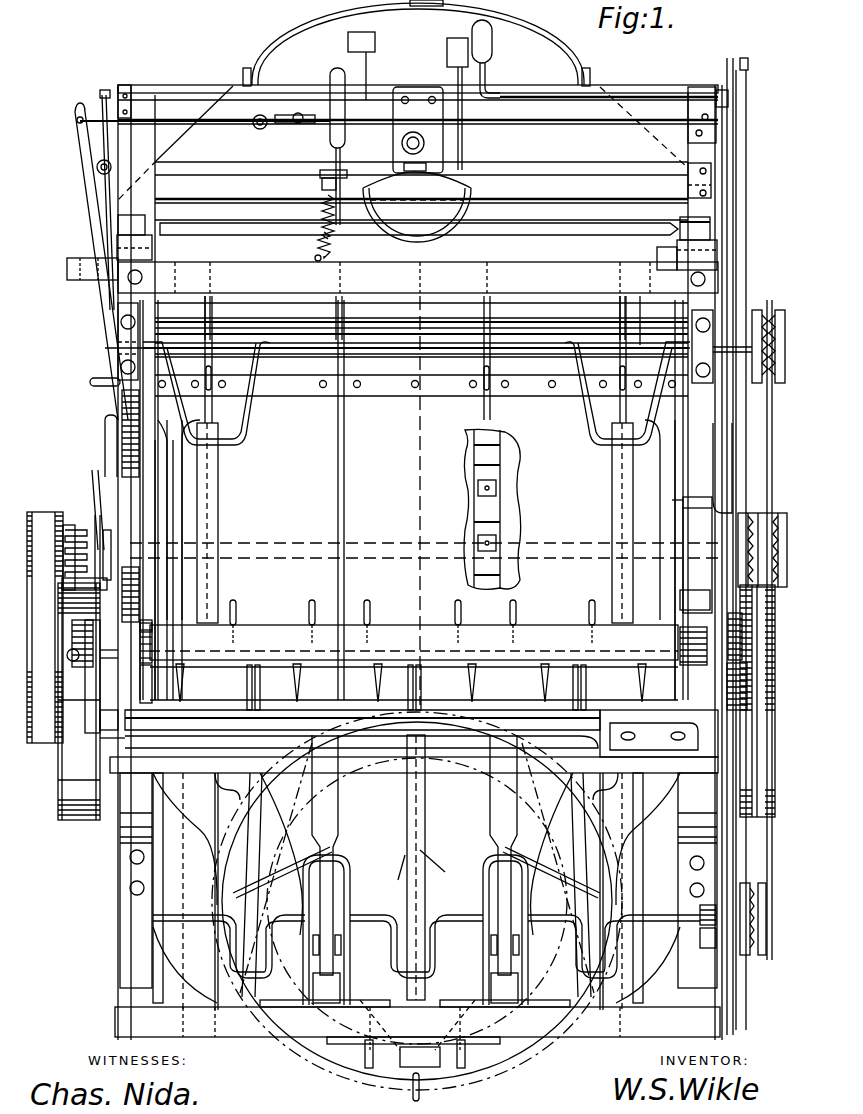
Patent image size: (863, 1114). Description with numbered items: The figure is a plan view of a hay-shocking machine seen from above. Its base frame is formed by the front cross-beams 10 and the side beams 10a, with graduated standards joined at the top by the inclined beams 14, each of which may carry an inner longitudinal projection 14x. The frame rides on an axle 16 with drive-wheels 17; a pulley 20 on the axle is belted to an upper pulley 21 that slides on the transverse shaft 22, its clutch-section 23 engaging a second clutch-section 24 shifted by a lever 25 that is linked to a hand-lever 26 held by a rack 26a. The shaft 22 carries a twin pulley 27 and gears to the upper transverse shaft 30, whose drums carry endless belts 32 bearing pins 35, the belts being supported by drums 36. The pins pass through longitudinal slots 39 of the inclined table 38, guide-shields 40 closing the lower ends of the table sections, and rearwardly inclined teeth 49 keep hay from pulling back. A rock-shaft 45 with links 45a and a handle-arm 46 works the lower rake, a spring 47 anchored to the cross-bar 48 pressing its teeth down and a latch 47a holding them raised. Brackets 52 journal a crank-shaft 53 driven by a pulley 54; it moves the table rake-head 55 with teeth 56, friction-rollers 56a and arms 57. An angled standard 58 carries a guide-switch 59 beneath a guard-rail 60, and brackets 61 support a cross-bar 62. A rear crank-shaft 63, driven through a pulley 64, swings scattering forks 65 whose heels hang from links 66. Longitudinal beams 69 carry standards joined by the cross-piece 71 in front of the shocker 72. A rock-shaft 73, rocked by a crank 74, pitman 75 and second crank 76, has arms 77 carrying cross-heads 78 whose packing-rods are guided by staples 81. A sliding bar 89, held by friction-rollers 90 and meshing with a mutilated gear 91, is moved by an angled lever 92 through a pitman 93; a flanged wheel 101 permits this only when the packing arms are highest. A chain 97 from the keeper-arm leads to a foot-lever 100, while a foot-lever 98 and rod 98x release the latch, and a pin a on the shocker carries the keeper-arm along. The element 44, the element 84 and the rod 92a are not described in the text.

The front cross-beams 10 is at (407, 169).
The side beams 10a is at (685, 212).
The rearwardly and upwardly inclined beam 14 is at (438, 500).
The longitudinal projection 14x is at (162, 510).
The axle 16 is at (526, 687).
The drive-wheels 17 is at (58, 780).
The pulley 20 is at (35, 627).
The upper pulley 21 is at (24, 522).
The transverse shaft 22 is at (86, 552).
The clutch-section 23 is at (66, 525).
The second clutch-section 24 is at (87, 530).
The lever 25 is at (90, 382).
The hand-lever 26 is at (298, 112).
The rack 26a is at (280, 128).
The twin pulley 27 is at (788, 553).
The upper transverse shaft 30 is at (725, 655).
The endless belt 32 is at (492, 509).
The pins 35 is at (415, 380).
The drums 36 is at (335, 392).
The table 38 is at (422, 471).
The longitudinal slots 39 is at (530, 428).
The guide-shield 40 is at (421, 330).
The rod 44 is at (644, 320).
The rock-shaft 45 is at (419, 234).
The links 45a is at (160, 255).
The handle-arm 46 is at (333, 128).
The spring 47 is at (330, 236).
The latch 47a is at (320, 180).
The cross-bar 48 is at (392, 275).
The teeth 49 is at (236, 608).
The brackets 52 is at (118, 350).
The crank-shaft 53 is at (110, 346).
The pulley 54 is at (762, 318).
The table rake-head 55 is at (414, 642).
The teeth 56 is at (414, 683).
The friction-roller 56a is at (152, 660).
The arm 57 is at (618, 530).
The angled standard 58 is at (733, 473).
The guide-switch 59 is at (148, 532).
The guard-rail 60 is at (132, 506).
The brackets 61 is at (418, 880).
The cross-bar 62 is at (414, 742).
The rear crank-shaft 63 is at (200, 920).
The pulley 64 is at (766, 905).
The scattering fork 65 is at (417, 870).
The link 66 is at (415, 687).
The longitudinal beams 69 is at (450, 868).
The cross-piece 71 is at (417, 1018).
The shocker 72 is at (417, 901).
The rock-shaft 73 is at (108, 732).
The crank 74 is at (150, 455).
The pitman 75 is at (72, 634).
The second crank 76 is at (95, 712).
The horizontal arms 77 is at (414, 855).
The cross-heads 78 is at (415, 988).
The staples 81 is at (155, 622).
The post 84 is at (405, 891).
The sliding bar 89 is at (750, 402).
The friction-rollers 90 is at (700, 940).
The mutilated gear 91 is at (418, 1067).
The angled lever 92 is at (492, 50).
The rod 92a is at (652, 97).
The pitman 93 is at (746, 131).
The chain 97 is at (105, 213).
The foot-lever 98 is at (447, 52).
The rod 98x is at (722, 596).
The foot-lever 100 is at (348, 44).
The flanged wheel 101 is at (748, 670).
The pin a is at (426, 1087).